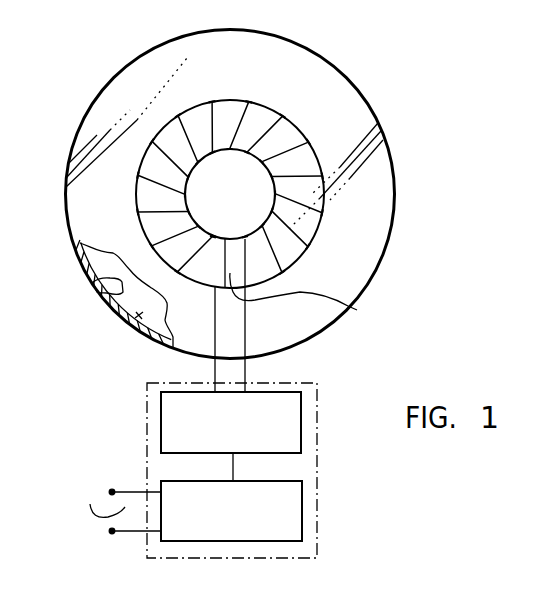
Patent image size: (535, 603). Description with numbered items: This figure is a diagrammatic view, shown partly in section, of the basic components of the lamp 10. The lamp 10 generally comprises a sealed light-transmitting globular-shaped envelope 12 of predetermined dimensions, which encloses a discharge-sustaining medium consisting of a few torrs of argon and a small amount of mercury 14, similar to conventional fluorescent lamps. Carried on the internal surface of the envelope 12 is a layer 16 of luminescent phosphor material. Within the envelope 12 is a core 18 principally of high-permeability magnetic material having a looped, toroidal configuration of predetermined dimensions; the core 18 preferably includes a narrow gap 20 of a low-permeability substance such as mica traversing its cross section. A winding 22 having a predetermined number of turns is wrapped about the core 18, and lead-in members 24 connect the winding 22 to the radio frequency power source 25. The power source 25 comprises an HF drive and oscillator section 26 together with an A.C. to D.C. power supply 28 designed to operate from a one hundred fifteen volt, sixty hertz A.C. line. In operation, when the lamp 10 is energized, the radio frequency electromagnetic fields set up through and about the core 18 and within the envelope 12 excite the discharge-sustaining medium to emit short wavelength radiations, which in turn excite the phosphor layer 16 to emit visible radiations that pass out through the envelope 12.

The lamp 10 is at (428, 158).
The envelope 12 is at (395, 217).
The mercury 14 is at (93, 283).
The layer of luminescent phosphor material 16 is at (140, 315).
The core 18 is at (306, 136).
The gap 20 is at (357, 310).
The winding 22 is at (252, 100).
The lead-in members 24 is at (245, 374).
The radio frequency power source 25 is at (317, 435).
The HF drive and oscillator section 26 is at (161, 440).
The A.C. to D.C. power supply 28 is at (170, 543).